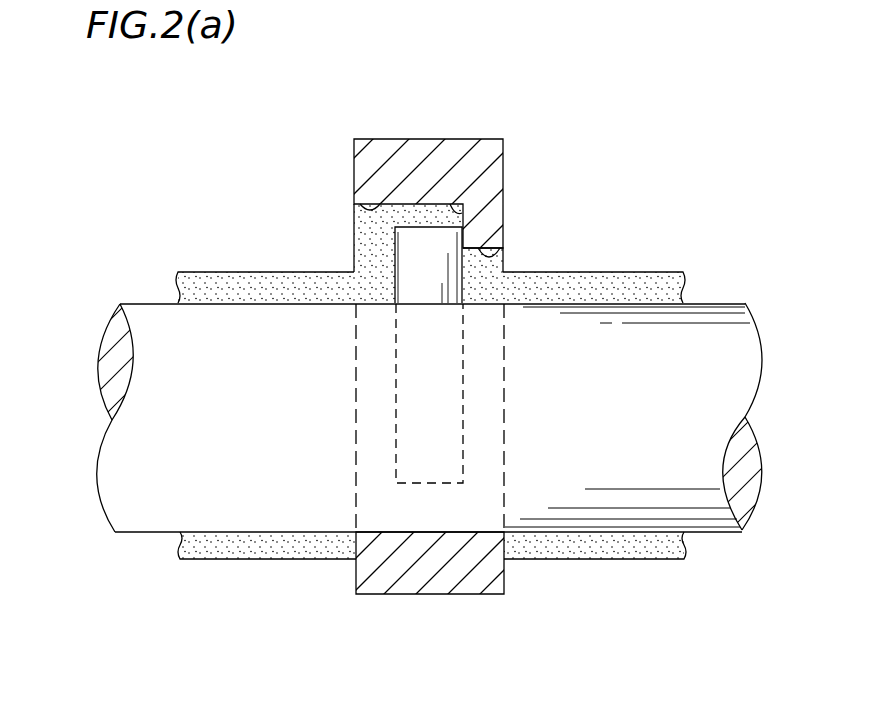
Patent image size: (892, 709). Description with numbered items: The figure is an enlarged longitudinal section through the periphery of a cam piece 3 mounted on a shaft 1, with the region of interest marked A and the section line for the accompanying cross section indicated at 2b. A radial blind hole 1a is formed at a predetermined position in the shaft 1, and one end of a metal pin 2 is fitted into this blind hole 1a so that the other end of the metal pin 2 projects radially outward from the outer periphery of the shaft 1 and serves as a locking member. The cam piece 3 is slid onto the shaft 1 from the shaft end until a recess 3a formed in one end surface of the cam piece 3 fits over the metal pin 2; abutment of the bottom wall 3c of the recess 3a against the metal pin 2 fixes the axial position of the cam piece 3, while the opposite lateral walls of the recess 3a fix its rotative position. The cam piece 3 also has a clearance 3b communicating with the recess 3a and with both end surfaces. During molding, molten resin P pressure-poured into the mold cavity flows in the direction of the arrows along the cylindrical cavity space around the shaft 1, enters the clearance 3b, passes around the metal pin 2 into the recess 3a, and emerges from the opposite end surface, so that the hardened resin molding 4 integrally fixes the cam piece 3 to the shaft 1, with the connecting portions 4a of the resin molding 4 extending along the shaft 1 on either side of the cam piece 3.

The shaft 1 is at (132, 304).
The radial blind hole 1a is at (397, 318).
The metal pin 2 is at (391, 248).
The section line 2b is at (427, 150).
The cam piece 3 is at (503, 158).
The recess 3a is at (360, 207).
The clearance 3b is at (500, 252).
The bottom wall 3c is at (452, 203).
The resin molding 4 is at (354, 255).
The connecting portions 4a is at (218, 559).
The mounting region A is at (206, 181).
The molten resin P is at (177, 257).